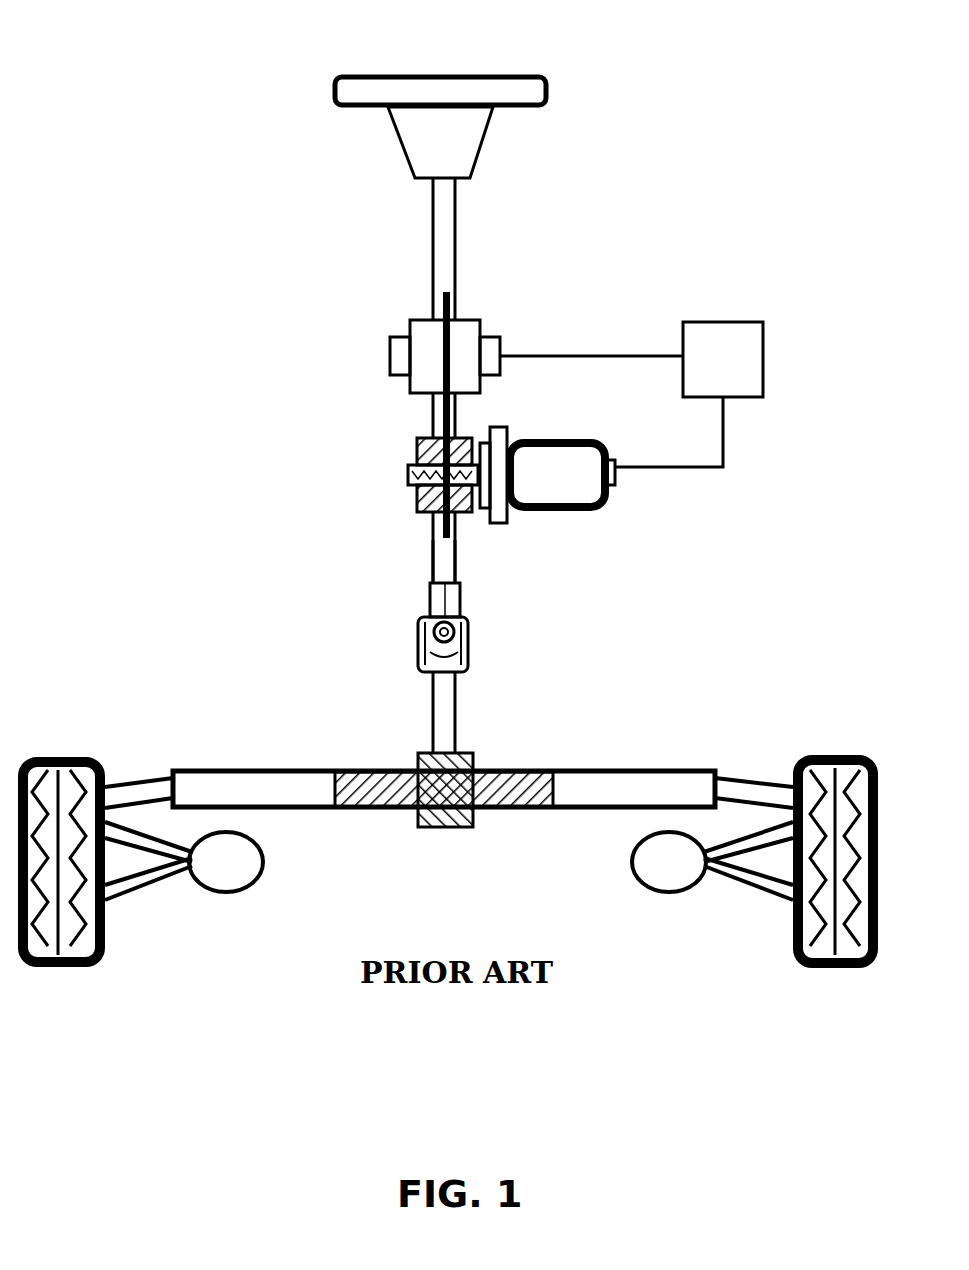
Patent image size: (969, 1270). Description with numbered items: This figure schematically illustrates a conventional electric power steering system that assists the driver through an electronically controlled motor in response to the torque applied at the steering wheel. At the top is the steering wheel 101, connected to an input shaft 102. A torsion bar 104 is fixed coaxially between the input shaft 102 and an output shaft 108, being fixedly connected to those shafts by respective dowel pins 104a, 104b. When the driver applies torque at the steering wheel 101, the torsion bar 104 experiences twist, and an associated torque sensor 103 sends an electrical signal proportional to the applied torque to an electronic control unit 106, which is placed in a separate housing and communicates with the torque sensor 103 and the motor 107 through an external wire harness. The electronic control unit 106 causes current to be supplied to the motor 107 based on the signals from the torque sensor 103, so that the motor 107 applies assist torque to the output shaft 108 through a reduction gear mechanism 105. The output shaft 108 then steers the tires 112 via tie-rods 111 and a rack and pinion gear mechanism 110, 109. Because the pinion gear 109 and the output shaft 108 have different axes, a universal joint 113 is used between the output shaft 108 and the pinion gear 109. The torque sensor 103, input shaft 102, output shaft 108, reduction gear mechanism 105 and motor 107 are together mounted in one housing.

The steering wheel 101 is at (550, 80).
The input shaft 102 is at (462, 220).
The torque sensor 103 is at (512, 285).
The torsion bar 104 is at (440, 345).
The dowel pin 104a is at (432, 300).
The dowel pin 104b is at (433, 528).
The reduction gear mechanism 105 is at (410, 472).
The electronic control unit 106 is at (762, 320).
The motor 107 is at (620, 478).
The output shaft 108 is at (462, 556).
The pinion gear 109 is at (418, 755).
The rack 110 is at (345, 772).
The tie-rods 111 is at (143, 775).
The tires 112 is at (70, 757).
The universal joint 113 is at (475, 638).